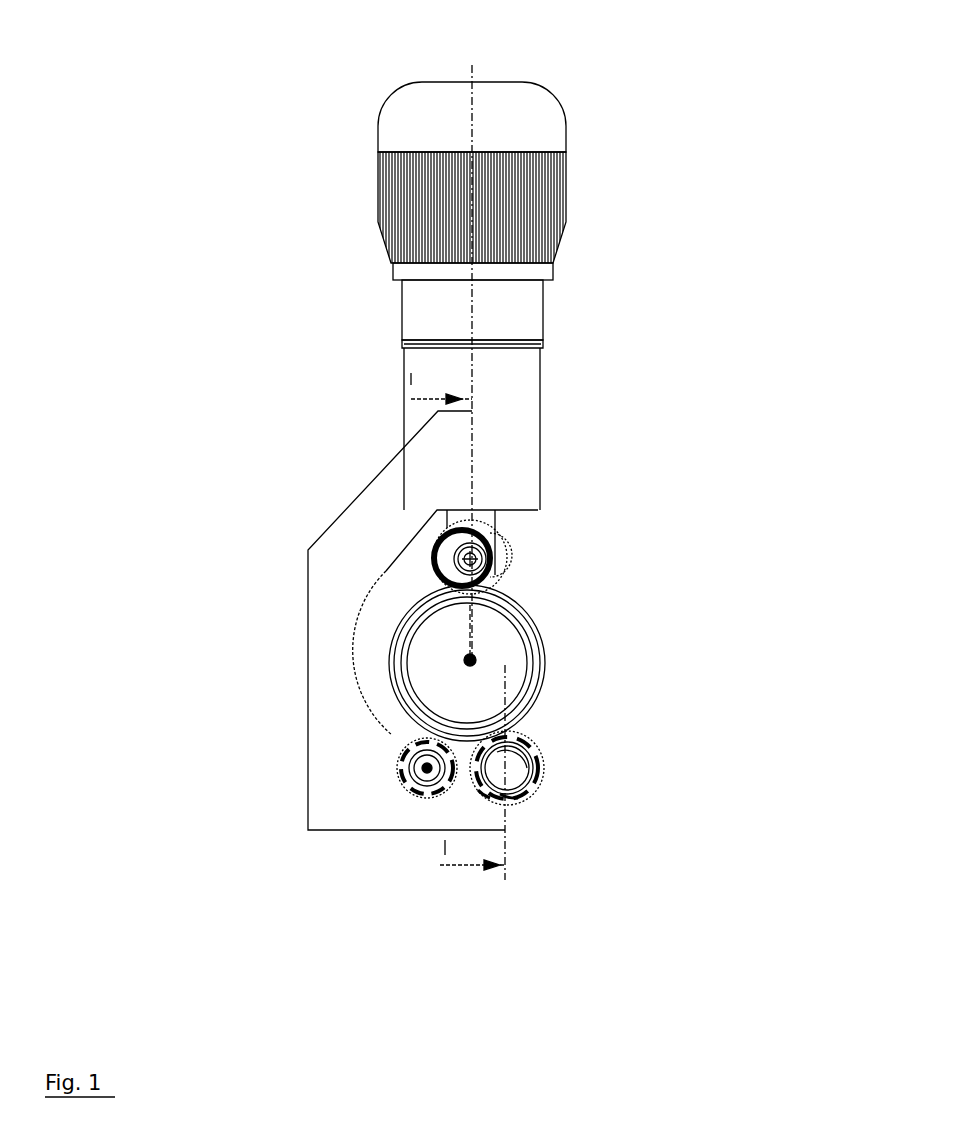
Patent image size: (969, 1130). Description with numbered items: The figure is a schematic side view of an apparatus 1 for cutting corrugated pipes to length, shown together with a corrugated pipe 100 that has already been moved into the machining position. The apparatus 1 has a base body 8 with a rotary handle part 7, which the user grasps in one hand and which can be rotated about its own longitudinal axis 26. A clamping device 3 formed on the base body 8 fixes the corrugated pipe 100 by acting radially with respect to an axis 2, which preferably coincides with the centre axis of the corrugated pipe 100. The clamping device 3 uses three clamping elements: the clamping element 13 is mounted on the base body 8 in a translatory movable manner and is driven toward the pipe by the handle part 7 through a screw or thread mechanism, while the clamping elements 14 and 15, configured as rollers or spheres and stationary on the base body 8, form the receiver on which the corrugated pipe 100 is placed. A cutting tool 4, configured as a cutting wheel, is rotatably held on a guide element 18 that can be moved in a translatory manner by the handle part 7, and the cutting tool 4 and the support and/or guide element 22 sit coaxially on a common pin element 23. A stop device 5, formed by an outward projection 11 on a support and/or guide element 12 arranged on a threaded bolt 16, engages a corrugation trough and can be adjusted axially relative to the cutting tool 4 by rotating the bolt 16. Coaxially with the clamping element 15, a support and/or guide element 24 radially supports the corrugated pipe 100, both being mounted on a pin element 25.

The apparatus 1 is at (640, 402).
The axis 2 is at (470, 660).
The clamping device 3 is at (402, 729).
The cutting tool 4 is at (673, 536).
The stop device 5 is at (548, 740).
The handle part 7 is at (533, 217).
The base body 8 is at (405, 485).
The projection 11 is at (545, 768).
The support and/or guide element 12 is at (512, 798).
The clamping element 13 is at (505, 557).
The clamping element 14 is at (488, 797).
The clamping element 15 is at (413, 795).
The bolt 16 is at (513, 770).
The guide element 18 is at (482, 520).
The support and/or guide element 22 is at (432, 549).
The pin element 23 is at (470, 558).
The support and/or guide element 24 is at (398, 779).
The pin element 25 is at (427, 768).
The longitudinal axis 26 is at (477, 92).
The corrugated pipe 100 is at (542, 652).